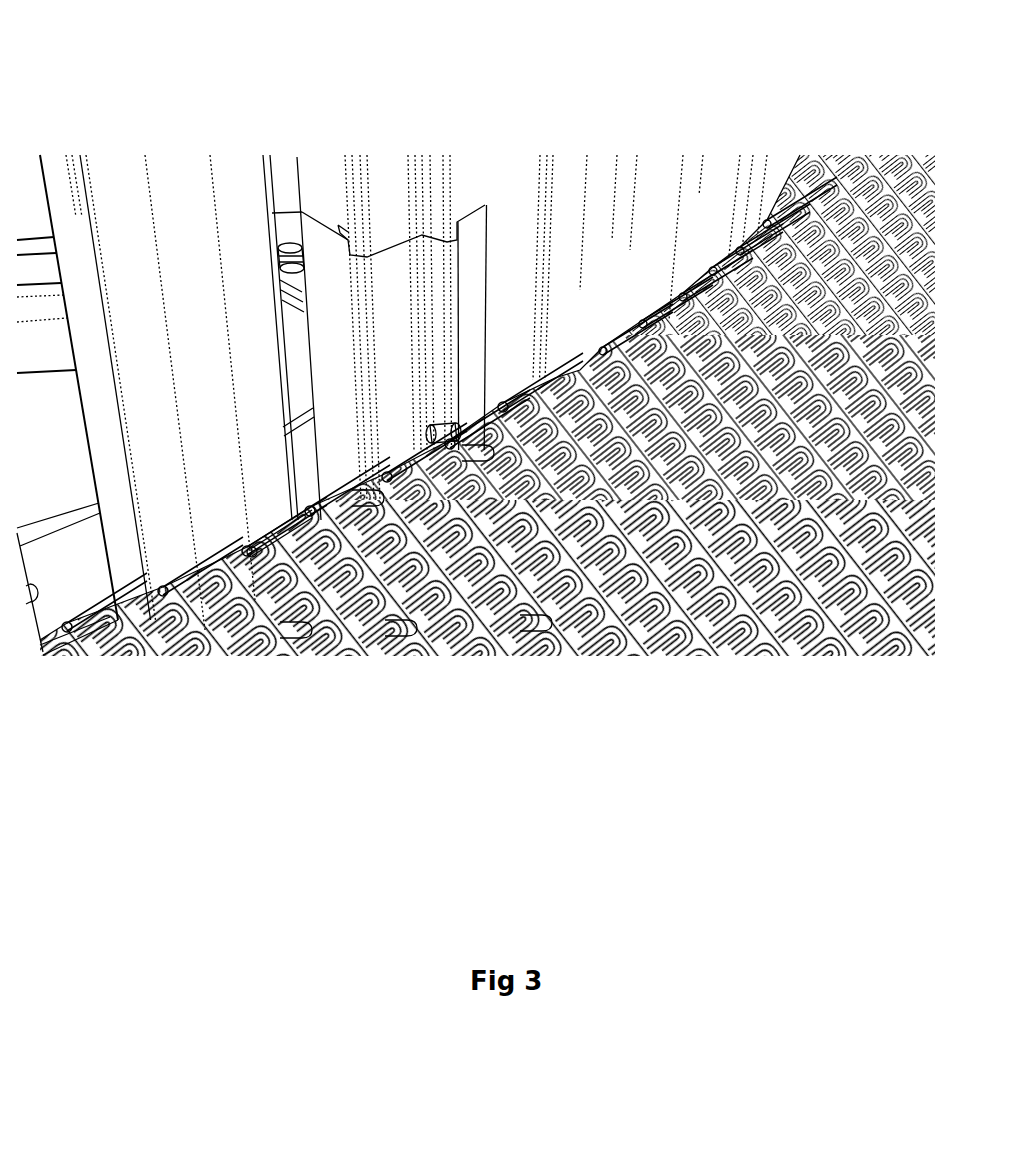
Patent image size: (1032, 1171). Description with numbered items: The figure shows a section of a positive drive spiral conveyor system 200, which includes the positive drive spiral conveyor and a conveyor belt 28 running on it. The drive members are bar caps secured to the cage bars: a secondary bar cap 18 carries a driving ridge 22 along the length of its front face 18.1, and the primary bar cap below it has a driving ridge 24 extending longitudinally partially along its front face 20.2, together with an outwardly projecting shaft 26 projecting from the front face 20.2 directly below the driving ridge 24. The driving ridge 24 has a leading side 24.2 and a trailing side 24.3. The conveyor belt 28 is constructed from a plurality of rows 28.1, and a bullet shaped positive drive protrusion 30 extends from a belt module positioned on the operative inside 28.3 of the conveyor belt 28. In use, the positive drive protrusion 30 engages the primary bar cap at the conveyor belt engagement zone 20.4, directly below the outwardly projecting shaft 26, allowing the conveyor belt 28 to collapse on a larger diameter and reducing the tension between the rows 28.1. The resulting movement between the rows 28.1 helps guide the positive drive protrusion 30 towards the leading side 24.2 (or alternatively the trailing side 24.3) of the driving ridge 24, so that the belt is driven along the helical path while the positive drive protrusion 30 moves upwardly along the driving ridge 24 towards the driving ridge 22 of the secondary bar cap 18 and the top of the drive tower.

The positive drive spiral conveyor system 200 is at (248, 106).
The secondary bar cap 18 is at (346, 160).
The front face 18.1 is at (390, 177).
The driving ridge 22 is at (440, 192).
The front face 20.2 is at (472, 305).
The driving ridge 24 is at (440, 318).
The leading side 24.2 is at (470, 372).
The trailing side 24.3 is at (388, 373).
The conveyor belt engagement zone 20.4 is at (462, 445).
The outwardly projecting shaft 26 is at (428, 432).
The operative inside 28.3 is at (350, 497).
The positive drive protrusion 30 is at (250, 547).
The rows 28.1 is at (295, 632).
The conveyor belt 28 is at (768, 642).